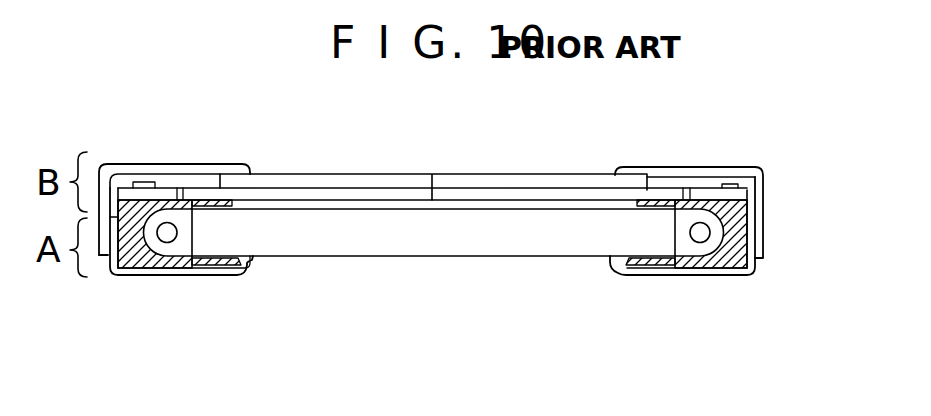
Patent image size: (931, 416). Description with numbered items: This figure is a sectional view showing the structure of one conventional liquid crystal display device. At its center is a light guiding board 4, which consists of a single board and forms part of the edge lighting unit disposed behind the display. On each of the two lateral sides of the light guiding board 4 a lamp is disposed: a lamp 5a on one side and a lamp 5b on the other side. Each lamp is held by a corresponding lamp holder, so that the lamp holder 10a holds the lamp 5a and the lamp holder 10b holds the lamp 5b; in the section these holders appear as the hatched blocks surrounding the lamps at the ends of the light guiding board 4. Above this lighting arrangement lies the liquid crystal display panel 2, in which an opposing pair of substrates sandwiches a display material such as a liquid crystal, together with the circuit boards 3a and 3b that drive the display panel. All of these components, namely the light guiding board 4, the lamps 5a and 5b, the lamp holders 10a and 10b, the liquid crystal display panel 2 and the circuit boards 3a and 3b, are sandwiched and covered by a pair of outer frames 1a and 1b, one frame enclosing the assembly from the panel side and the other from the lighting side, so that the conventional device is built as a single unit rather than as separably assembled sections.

The outer frame 1a is at (671, 176).
The outer frame 1b is at (712, 275).
The liquid crystal display panel 2 is at (453, 182).
The circuit board 3a is at (159, 189).
The circuit board 3b is at (740, 191).
The light guiding board 4 is at (394, 245).
The lamp 5a is at (167, 232).
The lamp 5b is at (700, 232).
The lamp holder 10a is at (145, 252).
The lamp holder 10b is at (738, 247).